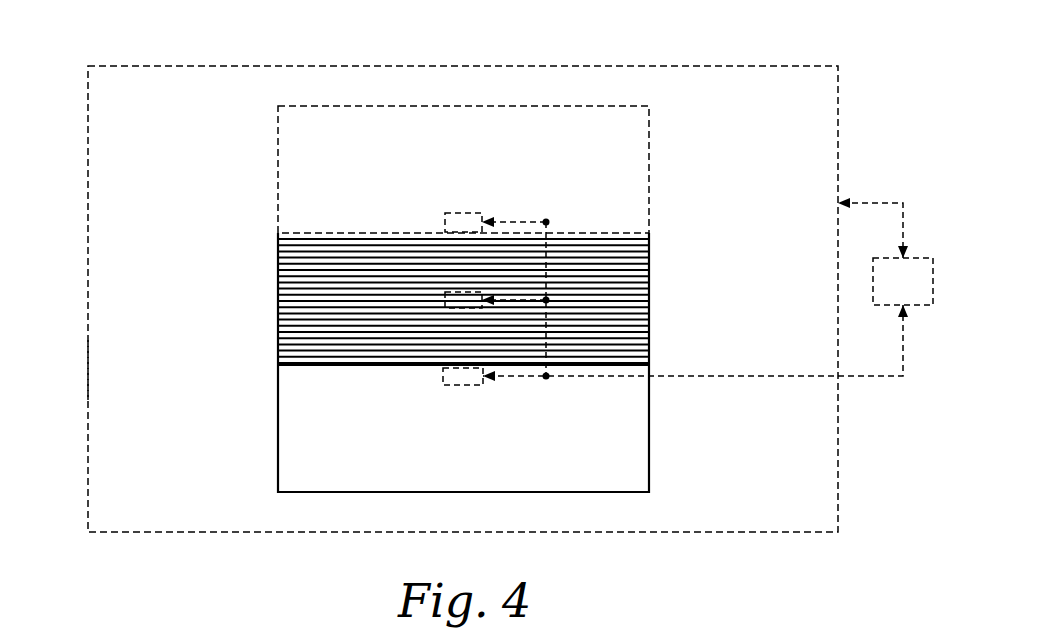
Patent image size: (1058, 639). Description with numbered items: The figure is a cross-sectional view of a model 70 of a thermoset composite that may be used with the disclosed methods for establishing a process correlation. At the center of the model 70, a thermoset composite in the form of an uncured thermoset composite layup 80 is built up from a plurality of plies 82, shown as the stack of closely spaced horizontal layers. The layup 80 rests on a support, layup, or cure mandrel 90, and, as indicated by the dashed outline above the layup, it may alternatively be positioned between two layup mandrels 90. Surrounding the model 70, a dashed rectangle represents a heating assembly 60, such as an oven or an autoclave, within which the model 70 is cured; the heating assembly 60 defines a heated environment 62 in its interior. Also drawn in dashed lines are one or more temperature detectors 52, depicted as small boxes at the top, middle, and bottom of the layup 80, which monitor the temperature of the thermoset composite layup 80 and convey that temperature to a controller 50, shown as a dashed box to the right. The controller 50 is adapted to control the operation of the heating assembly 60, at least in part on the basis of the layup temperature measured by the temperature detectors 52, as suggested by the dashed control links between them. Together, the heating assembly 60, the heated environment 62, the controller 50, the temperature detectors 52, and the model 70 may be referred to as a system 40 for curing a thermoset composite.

The system for curing a thermoset composite 40 is at (873, 86).
The controller 50 is at (919, 294).
The temperature detectors 52 is at (445, 218).
The heating assembly 60 is at (88, 127).
The heated environment 62 is at (108, 366).
The model 70 is at (198, 187).
The uncured thermoset composite layup 80 is at (268, 292).
The plies 82 is at (649, 265).
The layup mandrel 90 is at (649, 158).